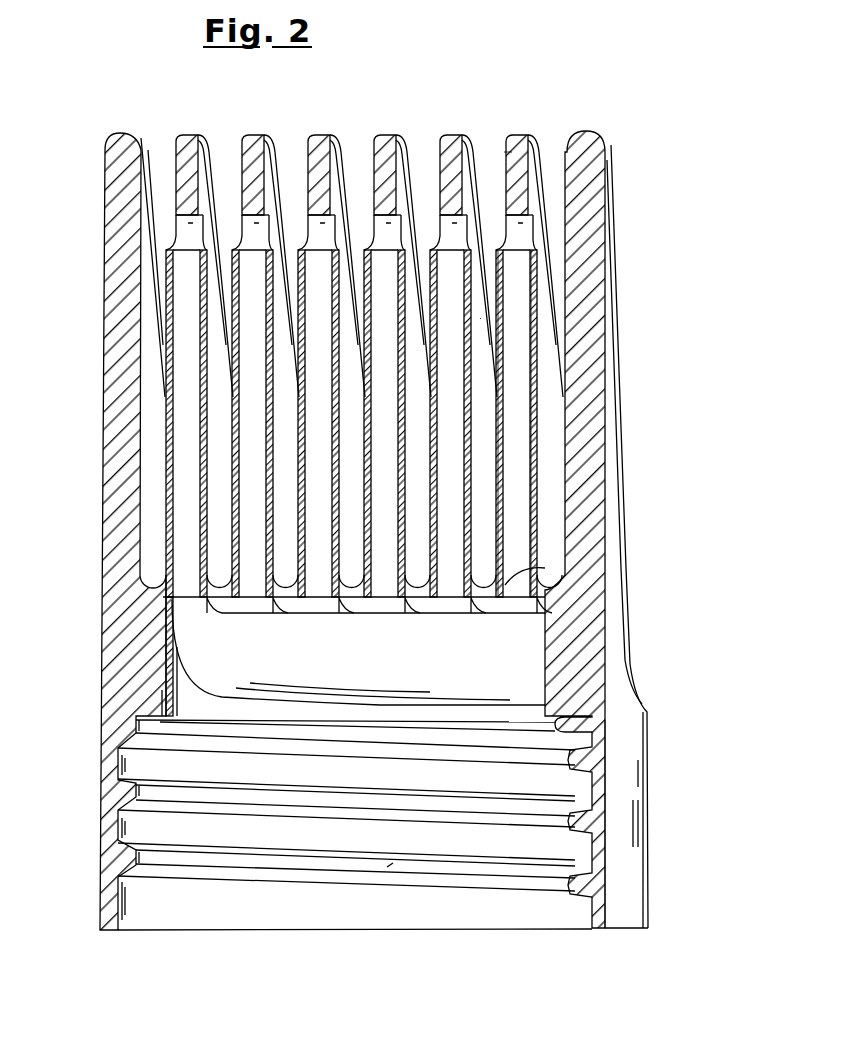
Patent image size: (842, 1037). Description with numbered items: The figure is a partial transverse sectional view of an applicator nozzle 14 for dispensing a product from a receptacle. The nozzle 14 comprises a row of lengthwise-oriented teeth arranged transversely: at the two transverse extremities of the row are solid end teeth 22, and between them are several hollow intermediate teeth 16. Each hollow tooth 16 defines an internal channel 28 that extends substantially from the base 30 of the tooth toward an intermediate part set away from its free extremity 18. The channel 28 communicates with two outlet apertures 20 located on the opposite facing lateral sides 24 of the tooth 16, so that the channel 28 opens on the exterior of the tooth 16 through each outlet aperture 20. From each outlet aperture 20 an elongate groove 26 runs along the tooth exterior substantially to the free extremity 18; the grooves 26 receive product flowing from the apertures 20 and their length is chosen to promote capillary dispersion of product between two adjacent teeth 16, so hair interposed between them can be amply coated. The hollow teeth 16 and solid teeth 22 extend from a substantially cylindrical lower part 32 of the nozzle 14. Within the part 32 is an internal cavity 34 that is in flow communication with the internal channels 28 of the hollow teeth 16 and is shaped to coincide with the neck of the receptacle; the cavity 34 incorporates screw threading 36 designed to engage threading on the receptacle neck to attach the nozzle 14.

The applicator nozzle 14 is at (676, 786).
The hollow intermediate tooth 16 is at (378, 318).
The free extremity 18 is at (519, 140).
The outlet aperture 20 is at (510, 237).
The solid end tooth 22 is at (100, 372).
The lateral side 24 is at (480, 318).
The elongate groove 26 is at (512, 152).
The internal channel 28 is at (540, 450).
The base 30 is at (545, 568).
The part 32 is at (630, 860).
The internal cavity 34 is at (500, 845).
The screw threading 36 is at (387, 867).